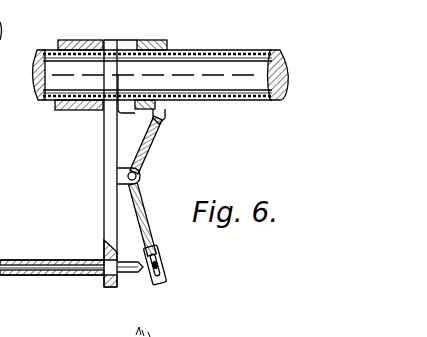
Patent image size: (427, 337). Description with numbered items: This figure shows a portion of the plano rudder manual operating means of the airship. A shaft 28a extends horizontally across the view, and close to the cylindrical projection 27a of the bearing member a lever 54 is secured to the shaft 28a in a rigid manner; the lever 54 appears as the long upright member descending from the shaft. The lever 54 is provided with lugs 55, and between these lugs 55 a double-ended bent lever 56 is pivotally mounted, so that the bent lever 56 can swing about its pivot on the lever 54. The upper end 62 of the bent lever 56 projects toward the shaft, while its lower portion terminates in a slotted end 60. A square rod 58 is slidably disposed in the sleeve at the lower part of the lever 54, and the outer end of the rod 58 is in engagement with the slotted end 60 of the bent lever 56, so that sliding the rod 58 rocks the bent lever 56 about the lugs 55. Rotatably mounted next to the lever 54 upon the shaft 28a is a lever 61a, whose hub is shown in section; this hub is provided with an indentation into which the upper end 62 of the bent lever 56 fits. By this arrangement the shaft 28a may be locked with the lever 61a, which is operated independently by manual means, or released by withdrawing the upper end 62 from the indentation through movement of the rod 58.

The cylindrical projection 27a is at (71, 40).
The shaft 28a is at (245, 50).
The lever 61a is at (151, 40).
The upper end of lever 62 is at (163, 111).
The double-ended bent lever 56 is at (155, 132).
The lug 55 is at (140, 176).
The lever 54 is at (104, 172).
The square rod 58 is at (7, 262).
The slotted end 60 is at (161, 262).